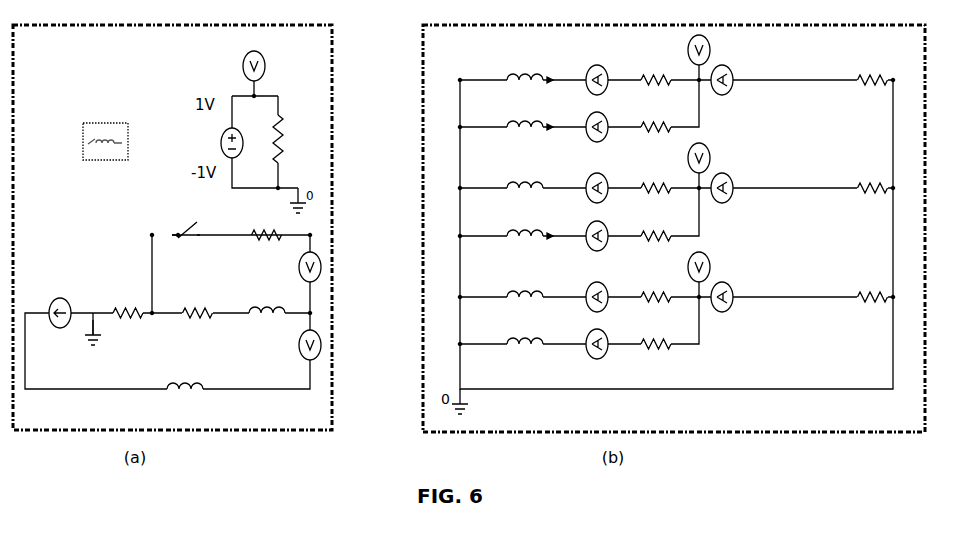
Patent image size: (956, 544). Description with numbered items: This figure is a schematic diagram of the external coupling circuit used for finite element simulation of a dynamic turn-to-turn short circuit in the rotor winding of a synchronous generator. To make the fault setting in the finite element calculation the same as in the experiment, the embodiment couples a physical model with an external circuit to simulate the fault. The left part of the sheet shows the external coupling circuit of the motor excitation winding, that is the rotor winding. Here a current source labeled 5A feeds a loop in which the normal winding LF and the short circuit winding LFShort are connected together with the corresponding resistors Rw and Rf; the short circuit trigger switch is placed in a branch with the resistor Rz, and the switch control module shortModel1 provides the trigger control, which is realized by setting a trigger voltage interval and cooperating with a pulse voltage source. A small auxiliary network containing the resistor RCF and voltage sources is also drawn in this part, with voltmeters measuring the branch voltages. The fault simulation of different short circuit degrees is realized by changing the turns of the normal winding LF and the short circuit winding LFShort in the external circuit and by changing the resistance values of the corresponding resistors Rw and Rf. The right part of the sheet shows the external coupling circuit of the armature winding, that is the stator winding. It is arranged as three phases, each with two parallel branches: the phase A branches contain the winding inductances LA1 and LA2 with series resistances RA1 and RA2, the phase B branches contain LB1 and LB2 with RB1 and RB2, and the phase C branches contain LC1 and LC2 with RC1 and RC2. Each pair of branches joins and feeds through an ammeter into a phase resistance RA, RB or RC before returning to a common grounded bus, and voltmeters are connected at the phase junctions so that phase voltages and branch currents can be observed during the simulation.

The capacitive fault resistance RCF is at (294, 139).
The switch control module shortModel1 is at (111, 154).
The 5 A current source 5A is at (58, 327).
The resistor Rf is at (128, 327).
The resistor Rw is at (198, 327).
The short circuit winding LFShort is at (263, 327).
The normal winding LF is at (185, 402).
The impedance resistance Rz is at (267, 251).
The phase A winding 1 inductance LA1 is at (525, 95).
The phase A winding 2 inductance LA2 is at (525, 142).
The phase B winding 1 inductance LB1 is at (525, 203).
The phase B winding 2 inductance LB2 is at (525, 251).
The phase C winding 1 inductance LC1 is at (525, 311).
The phase C winding 2 inductance LC2 is at (525, 359).
The phase A winding 1 resistance RA1 is at (653, 95).
The phase A winding 2 resistance RA2 is at (653, 143).
The phase B winding 1 resistance RB1 is at (653, 203).
The phase B winding 2 resistance RB2 is at (653, 251).
The phase C winding 1 resistance RC1 is at (653, 312).
The phase C winding 2 resistance RC2 is at (653, 359).
The phase A load resistance RA is at (872, 95).
The phase B load resistance RB is at (872, 203).
The phase C load resistance RC is at (872, 312).